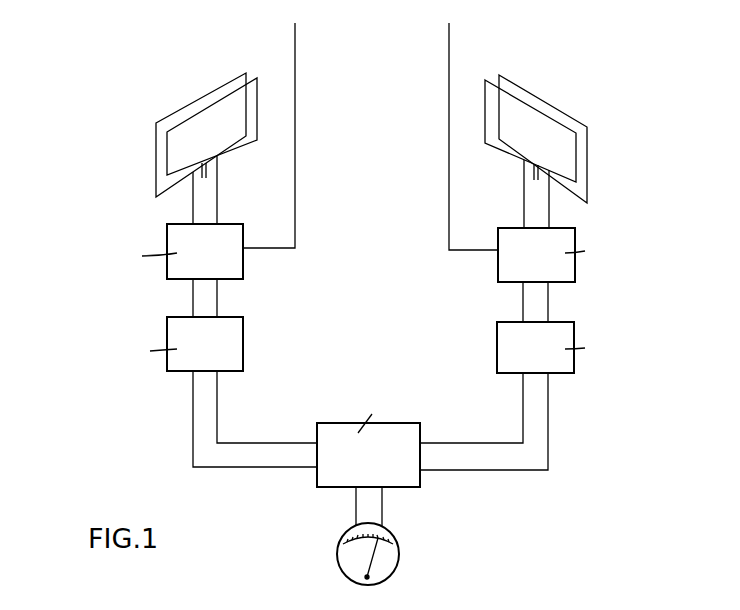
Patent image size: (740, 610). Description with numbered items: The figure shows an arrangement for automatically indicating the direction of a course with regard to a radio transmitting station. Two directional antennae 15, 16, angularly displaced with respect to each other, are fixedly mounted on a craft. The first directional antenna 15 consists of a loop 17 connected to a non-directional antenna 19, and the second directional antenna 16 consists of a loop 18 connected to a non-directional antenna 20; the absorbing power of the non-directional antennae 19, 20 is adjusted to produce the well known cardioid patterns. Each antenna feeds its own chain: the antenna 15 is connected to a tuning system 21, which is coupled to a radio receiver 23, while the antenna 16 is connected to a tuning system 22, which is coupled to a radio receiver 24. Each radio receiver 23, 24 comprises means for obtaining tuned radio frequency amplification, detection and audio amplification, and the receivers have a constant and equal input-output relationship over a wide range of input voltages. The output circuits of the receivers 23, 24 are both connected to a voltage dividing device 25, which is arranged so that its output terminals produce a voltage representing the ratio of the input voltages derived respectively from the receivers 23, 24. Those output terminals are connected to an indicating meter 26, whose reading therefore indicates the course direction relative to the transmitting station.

The directional antenna 15 is at (201, 113).
The directional antenna 16 is at (543, 118).
The loop 17 is at (212, 151).
The loop 18 is at (530, 154).
The non-directional antenna 19 is at (280, 135).
The non-directional antenna 20 is at (460, 136).
The tuning system 21 is at (144, 251).
The tuning system 22 is at (577, 255).
The radio receiver 23 is at (149, 325).
The radio receiver 24 is at (577, 327).
The voltage dividing device 25 is at (370, 429).
The indicating meter 26 is at (379, 536).